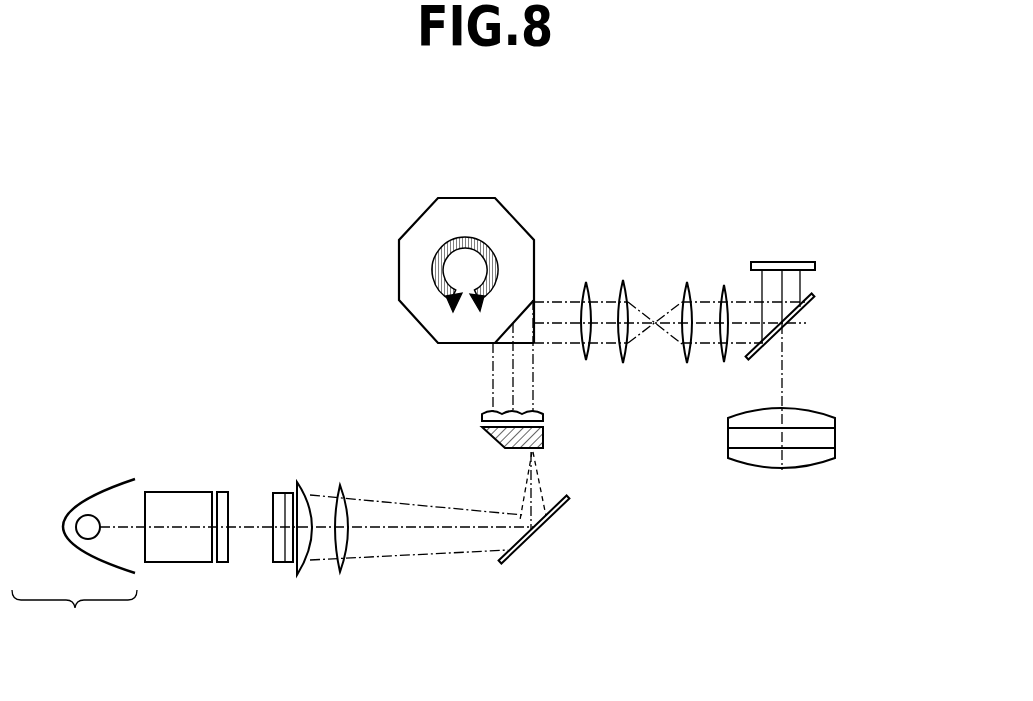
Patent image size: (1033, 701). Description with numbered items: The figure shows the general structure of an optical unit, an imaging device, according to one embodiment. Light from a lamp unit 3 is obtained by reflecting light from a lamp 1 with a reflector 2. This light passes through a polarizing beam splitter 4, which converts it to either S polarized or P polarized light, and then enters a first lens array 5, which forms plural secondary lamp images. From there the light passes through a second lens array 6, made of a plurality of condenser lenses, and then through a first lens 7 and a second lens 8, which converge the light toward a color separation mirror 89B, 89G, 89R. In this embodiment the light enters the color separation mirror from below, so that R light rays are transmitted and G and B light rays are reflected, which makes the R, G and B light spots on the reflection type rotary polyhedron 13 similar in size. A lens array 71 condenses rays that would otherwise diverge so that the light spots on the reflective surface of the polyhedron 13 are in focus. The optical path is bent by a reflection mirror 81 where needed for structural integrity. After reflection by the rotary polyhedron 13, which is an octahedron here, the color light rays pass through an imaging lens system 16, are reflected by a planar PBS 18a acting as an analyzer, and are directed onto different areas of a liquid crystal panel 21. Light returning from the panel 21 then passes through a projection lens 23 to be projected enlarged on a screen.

The lamp 1 is at (88, 515).
The reflector 2 is at (56, 506).
The lamp unit 3 is at (75, 610).
The polarizing beam splitter 4 is at (165, 492).
The first lens array 5 is at (222, 492).
The second lens array 6 is at (278, 493).
The first lens 7 is at (300, 480).
The second lens 8 is at (340, 484).
The reflection type rotary polyhedron 13 is at (420, 236).
The imaging lens system 16 is at (580, 272).
The planar PBS 18a is at (815, 296).
The liquid crystal panel 21 is at (793, 262).
The projection lens 23 is at (745, 467).
The lens array 71 is at (545, 416).
The reflection mirror 81 is at (570, 500).
The blue light emitting element 89B is at (483, 432).
The green light emitting element 89G is at (505, 447).
The red light emitting element 89R is at (543, 440).